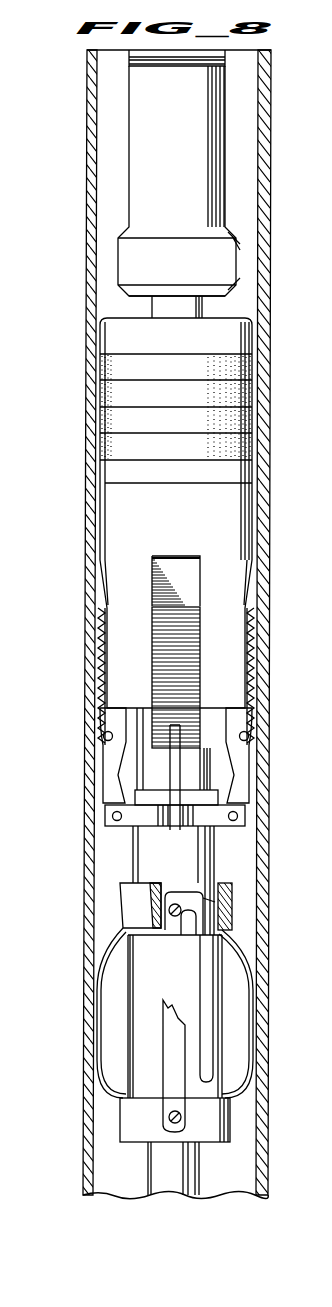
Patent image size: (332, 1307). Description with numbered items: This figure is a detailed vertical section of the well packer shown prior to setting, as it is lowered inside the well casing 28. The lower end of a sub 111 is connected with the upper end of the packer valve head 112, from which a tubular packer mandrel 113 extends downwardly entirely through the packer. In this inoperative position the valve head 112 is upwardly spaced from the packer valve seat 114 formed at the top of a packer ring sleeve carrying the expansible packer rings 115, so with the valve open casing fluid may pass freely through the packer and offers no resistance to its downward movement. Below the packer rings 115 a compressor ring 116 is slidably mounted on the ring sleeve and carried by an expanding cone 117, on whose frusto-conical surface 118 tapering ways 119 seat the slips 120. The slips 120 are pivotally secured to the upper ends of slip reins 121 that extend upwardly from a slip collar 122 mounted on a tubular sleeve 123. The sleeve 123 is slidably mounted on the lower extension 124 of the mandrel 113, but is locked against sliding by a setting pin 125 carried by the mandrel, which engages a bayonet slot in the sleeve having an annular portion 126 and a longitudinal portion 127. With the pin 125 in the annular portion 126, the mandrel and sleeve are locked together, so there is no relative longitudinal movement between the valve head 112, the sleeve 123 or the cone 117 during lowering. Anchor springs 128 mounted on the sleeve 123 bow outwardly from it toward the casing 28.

The well casing 28 is at (90, 80).
The sub 111 is at (133, 54).
The packer valve head 112 is at (133, 193).
The tubular packer mandrel 113 is at (152, 308).
The packer valve seat 114 is at (105, 342).
The expansible packer rings 115 is at (106, 392).
The compressor ring 116 is at (105, 473).
The expanding cone 117 is at (113, 517).
The frusto-conical surface 118 is at (100, 576).
The tapering ways 119 is at (172, 565).
The slips 120 is at (160, 640).
The slip reins 121 is at (107, 767).
The slip collar 122 is at (107, 818).
The tubular sleeve 123 is at (138, 848).
The lower extension of the mandrel 124 is at (195, 900).
The setting pin 125 is at (175, 916).
The annular portion of bayonet slot 126 is at (205, 910).
The longitudinal portion of bayonet slot 127 is at (210, 1025).
The anchor springs 128 is at (95, 1013).